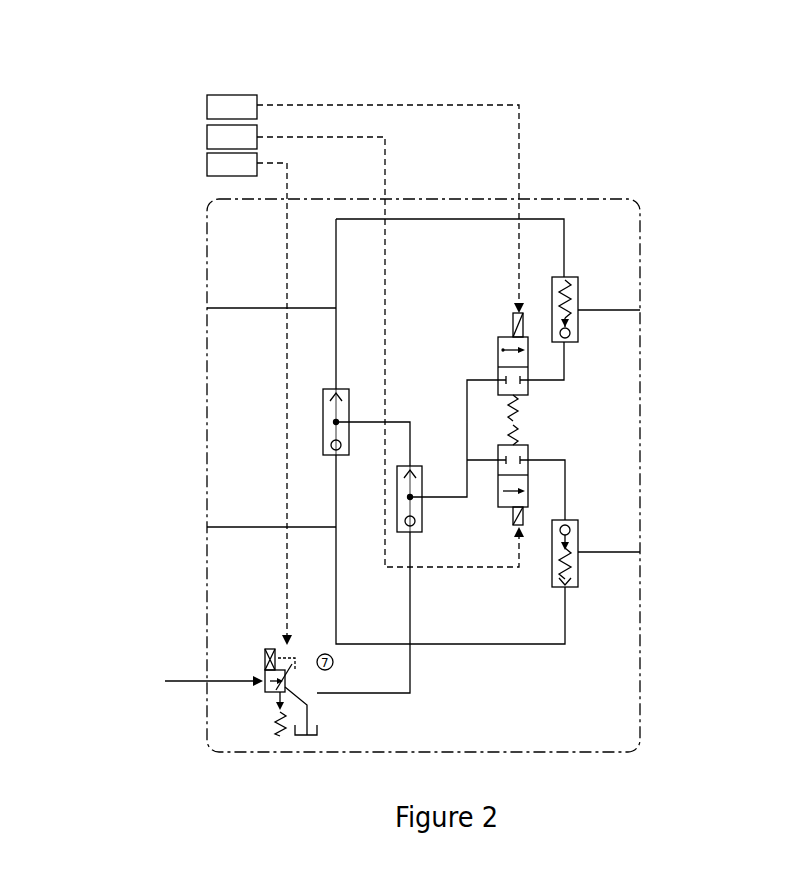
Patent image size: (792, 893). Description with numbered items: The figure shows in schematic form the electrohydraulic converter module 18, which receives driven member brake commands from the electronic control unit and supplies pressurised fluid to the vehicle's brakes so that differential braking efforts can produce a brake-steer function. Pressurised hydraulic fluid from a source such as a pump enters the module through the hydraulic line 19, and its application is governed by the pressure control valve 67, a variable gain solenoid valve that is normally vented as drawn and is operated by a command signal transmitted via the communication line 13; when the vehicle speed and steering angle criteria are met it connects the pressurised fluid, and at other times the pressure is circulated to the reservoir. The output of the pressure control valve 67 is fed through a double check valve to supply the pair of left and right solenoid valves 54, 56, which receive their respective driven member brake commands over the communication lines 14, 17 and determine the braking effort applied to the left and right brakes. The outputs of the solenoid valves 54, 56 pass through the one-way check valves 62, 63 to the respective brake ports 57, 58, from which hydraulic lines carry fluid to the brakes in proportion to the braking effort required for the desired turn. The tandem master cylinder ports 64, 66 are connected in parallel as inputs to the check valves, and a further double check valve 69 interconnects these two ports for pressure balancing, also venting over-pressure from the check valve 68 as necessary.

The communication line 13 is at (273, 170).
The communication line 14 is at (303, 102).
The communication line 17 is at (387, 172).
The electrohydraulic converter module 18 is at (692, 181).
The hydraulic line 19 is at (183, 680).
The solenoid valve 54 is at (527, 473).
The solenoid valve 56 is at (527, 342).
The brake port 57 is at (627, 547).
The brake port 58 is at (627, 307).
The one-way check valve 62 is at (575, 555).
The one-way check valve 63 is at (577, 325).
The tandem master cylinder port 64 is at (237, 520).
The tandem master cylinder port 66 is at (217, 298).
The pressure control valve 67 is at (282, 648).
The check valve 68 is at (417, 477).
The double check valve 69 is at (326, 413).